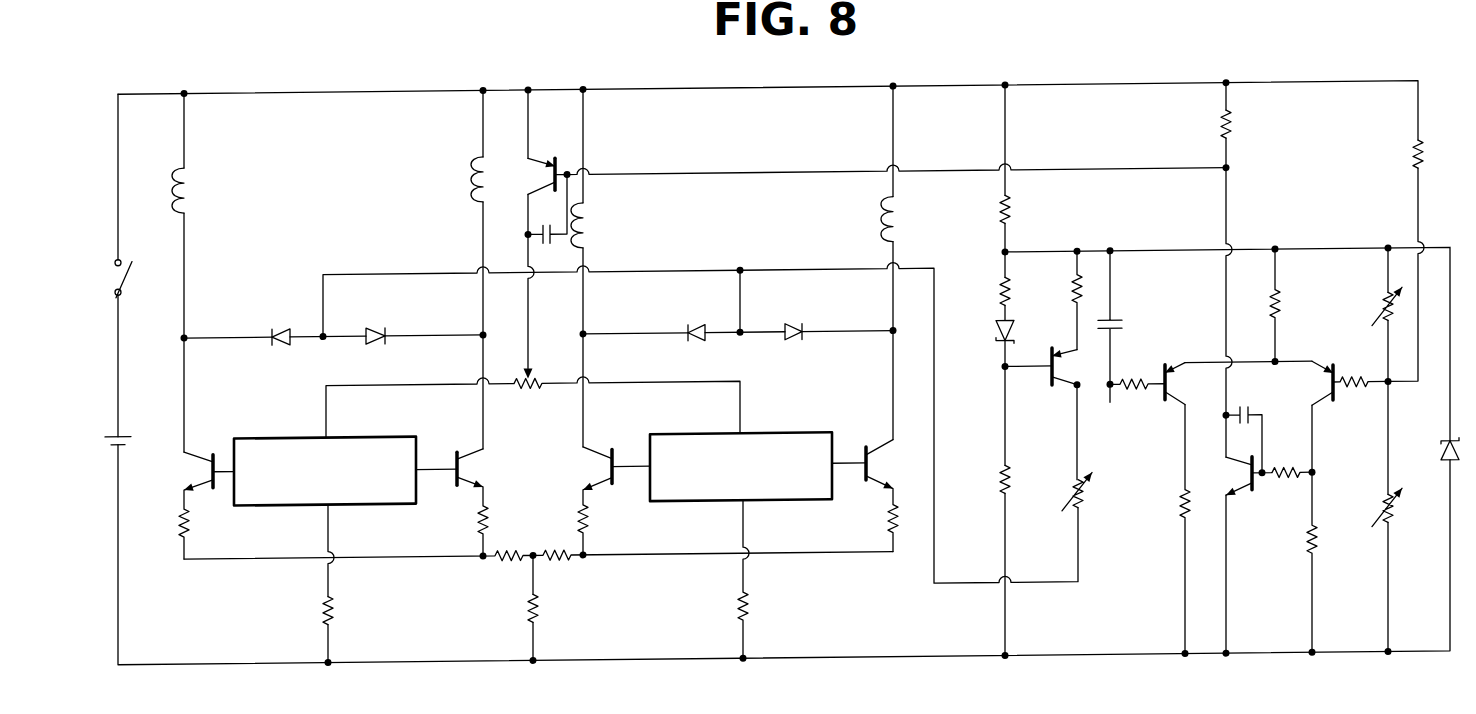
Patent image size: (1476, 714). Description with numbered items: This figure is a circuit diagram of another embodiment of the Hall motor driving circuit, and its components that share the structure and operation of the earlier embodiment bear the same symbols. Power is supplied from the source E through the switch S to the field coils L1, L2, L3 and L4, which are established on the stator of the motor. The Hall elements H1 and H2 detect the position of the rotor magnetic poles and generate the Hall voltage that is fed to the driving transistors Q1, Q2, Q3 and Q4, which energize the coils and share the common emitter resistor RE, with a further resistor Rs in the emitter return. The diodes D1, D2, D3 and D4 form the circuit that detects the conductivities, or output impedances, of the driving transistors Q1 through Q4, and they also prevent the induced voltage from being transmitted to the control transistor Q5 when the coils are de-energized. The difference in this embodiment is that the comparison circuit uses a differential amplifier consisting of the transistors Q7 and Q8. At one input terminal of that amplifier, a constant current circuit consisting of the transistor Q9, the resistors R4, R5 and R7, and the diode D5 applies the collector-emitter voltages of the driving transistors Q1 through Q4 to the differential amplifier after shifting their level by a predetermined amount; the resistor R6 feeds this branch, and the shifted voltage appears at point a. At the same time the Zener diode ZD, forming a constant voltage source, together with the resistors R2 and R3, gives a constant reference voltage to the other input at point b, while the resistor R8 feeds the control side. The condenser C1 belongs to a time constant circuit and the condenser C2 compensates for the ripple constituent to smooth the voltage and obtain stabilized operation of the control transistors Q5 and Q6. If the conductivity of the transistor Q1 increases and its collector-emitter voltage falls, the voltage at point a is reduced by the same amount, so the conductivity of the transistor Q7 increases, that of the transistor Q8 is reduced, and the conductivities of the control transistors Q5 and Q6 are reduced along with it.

The switch S is at (127, 280).
The battery (power source) E is at (133, 446).
The field coil L1 is at (194, 194).
The field coil L2 is at (469, 192).
The field coil L3 is at (593, 235).
The field coil L4 is at (900, 233).
The driving transistor Q1 is at (202, 473).
The driving transistor Q2 is at (482, 468).
The driving transistor Q3 is at (600, 478).
The driving transistor Q4 is at (869, 460).
The control transistor Q5 is at (1243, 488).
The control transistor Q6 is at (551, 182).
The transistor of differential amplifier Q7 is at (1170, 413).
The transistor of differential amplifier Q8 is at (1326, 398).
The transistor of constant current circuit Q9 is at (1070, 364).
The diode D1 is at (281, 326).
The diode D2 is at (380, 326).
The diode D3 is at (698, 328).
The diode D4 is at (796, 328).
The diode D5 is at (997, 343).
The Hall element H1 is at (418, 450).
The Hall element H2 is at (798, 441).
The resistor Rs is at (338, 613).
The emitter resistor RE is at (544, 615).
The resistor R2 is at (1378, 319).
The resistor R3 is at (1380, 521).
The resistor R4 is at (997, 301).
The resistor R5 is at (997, 487).
The resistor R6 is at (1013, 222).
The resistor R7 is at (1091, 497).
The resistor R8 is at (1236, 139).
The condenser C1 is at (1125, 336).
The condenser C2 is at (1243, 418).
The Zener diode ZD is at (1446, 456).
The point a is at (1110, 410).
The circuit point b is at (1386, 402).